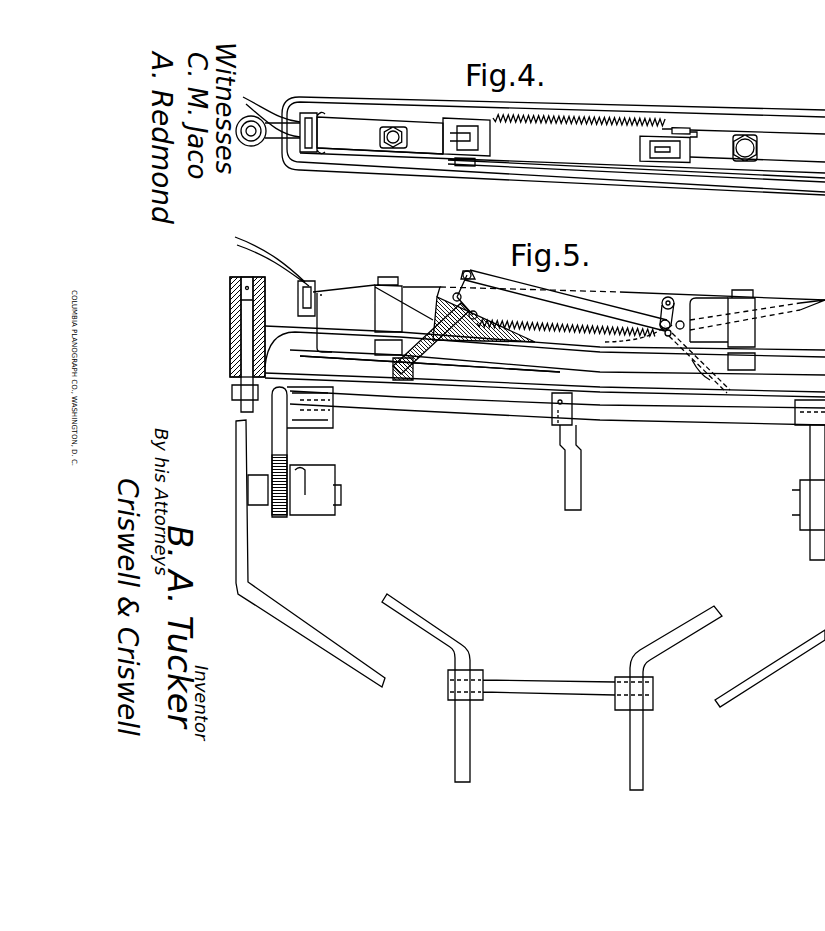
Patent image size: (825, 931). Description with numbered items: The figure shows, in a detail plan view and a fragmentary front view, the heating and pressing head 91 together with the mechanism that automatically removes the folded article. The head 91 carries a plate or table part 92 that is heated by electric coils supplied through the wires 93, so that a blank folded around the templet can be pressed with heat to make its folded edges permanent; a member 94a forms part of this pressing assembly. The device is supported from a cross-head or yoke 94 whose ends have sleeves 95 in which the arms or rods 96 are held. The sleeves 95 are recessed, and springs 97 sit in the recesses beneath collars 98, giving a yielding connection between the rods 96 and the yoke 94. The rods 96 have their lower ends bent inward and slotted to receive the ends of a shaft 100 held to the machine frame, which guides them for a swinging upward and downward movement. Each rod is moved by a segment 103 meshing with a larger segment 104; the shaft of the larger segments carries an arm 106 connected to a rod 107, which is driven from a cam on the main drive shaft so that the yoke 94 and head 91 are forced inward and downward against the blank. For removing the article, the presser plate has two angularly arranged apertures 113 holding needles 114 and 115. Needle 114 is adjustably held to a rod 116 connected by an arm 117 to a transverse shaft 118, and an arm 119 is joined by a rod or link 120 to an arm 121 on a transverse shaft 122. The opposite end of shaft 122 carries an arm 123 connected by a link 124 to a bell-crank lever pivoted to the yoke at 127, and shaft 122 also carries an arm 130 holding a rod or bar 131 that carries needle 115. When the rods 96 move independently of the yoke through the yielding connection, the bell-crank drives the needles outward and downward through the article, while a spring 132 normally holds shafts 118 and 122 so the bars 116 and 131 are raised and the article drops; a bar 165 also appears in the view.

In FIG. 4, the heating and pressing head 91 is at (757, 125).
In FIG. 5, the heating and pressing head 91 is at (517, 407).
In FIG. 5, the plate or table part 92 is at (600, 400).
In FIG. 4, the wires 93 is at (255, 100).
In FIG. 5, the wires 93 is at (245, 250).
In FIG. 4, the cross-head or yoke 94 is at (368, 135).
In FIG. 5, the cross-head or yoke 94 is at (780, 335).
In FIG. 4, the bar extension 94a is at (425, 163).
In FIG. 5, the sleeves 95 is at (232, 368).
In FIG. 5, the arms or rods 96 is at (240, 440).
In FIG. 5, the springs 97 is at (232, 328).
In FIG. 4, the collars 98 is at (249, 147).
In FIG. 5, the collars 98 is at (232, 296).
In FIG. 5, the shaft 100 is at (570, 690).
In FIG. 5, the segment 103 is at (280, 515).
In FIG. 5, the larger segment 104 is at (290, 450).
In FIG. 5, the arm 106 is at (552, 420).
In FIG. 5, the rod 107 is at (565, 486).
In FIG. 5, the angularly arranged apertures 113 is at (400, 398).
In FIG. 5, the needle 114 is at (470, 338).
In FIG. 5, the needle 115 is at (712, 370).
In FIG. 5, the rod 116 is at (340, 282).
In FIG. 4, the arm 117 is at (470, 135).
In FIG. 5, the arm 117 is at (470, 310).
In FIG. 4, the shaft 118 is at (470, 168).
In FIG. 5, the shaft 118 is at (420, 282).
In FIG. 5, the arm 119 is at (460, 283).
In FIG. 4, the rod or link 120 is at (575, 176).
In FIG. 5, the rod or link 120 is at (600, 290).
In FIG. 5, the arm 121 is at (680, 318).
In FIG. 5, the transverse shaft 122 is at (668, 297).
In FIG. 4, the arm 123 is at (690, 129).
In FIG. 4, the link 124 is at (747, 134).
In FIG. 5, the pivot 127 is at (757, 323).
In FIG. 4, the arm 130 is at (672, 154).
In FIG. 5, the rod or bar 131 is at (670, 336).
In FIG. 4, the spring 132 is at (600, 121).
In FIG. 5, the bar 165 is at (460, 412).